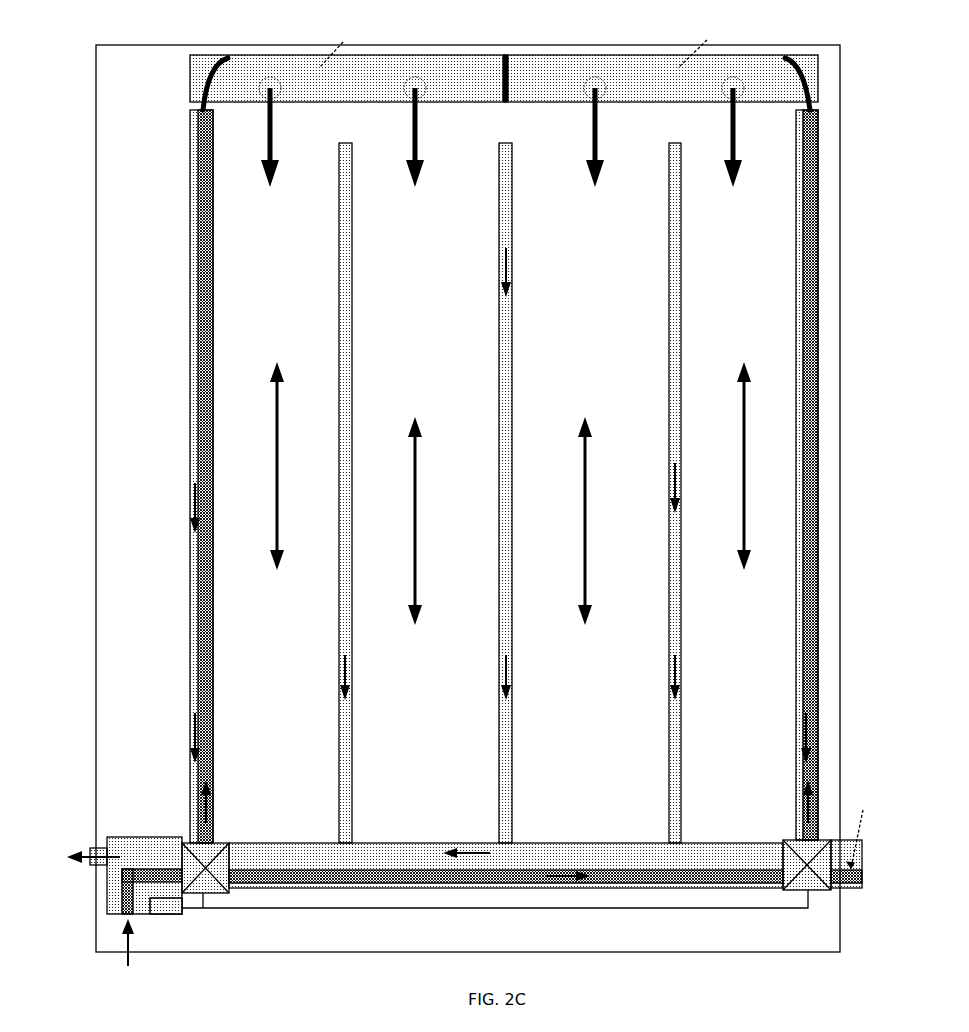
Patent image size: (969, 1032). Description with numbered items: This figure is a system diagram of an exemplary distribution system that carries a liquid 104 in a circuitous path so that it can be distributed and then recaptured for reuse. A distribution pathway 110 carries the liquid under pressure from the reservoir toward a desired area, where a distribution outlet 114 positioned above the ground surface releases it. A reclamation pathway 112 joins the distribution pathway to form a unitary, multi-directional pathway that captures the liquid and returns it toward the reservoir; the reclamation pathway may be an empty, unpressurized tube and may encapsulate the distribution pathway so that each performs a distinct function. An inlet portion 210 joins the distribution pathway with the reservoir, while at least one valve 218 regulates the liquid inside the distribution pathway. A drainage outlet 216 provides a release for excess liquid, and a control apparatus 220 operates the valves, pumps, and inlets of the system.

The liquid 104 is at (562, 865).
The distribution pathway 110 is at (420, 881).
The reclamation pathway 112 is at (680, 390).
The distribution outlet 114 is at (843, 44).
The inlet portion 210 is at (123, 915).
The drainage outlet 216 is at (102, 850).
The valve 218 is at (212, 895).
The control apparatus 220 is at (162, 912).